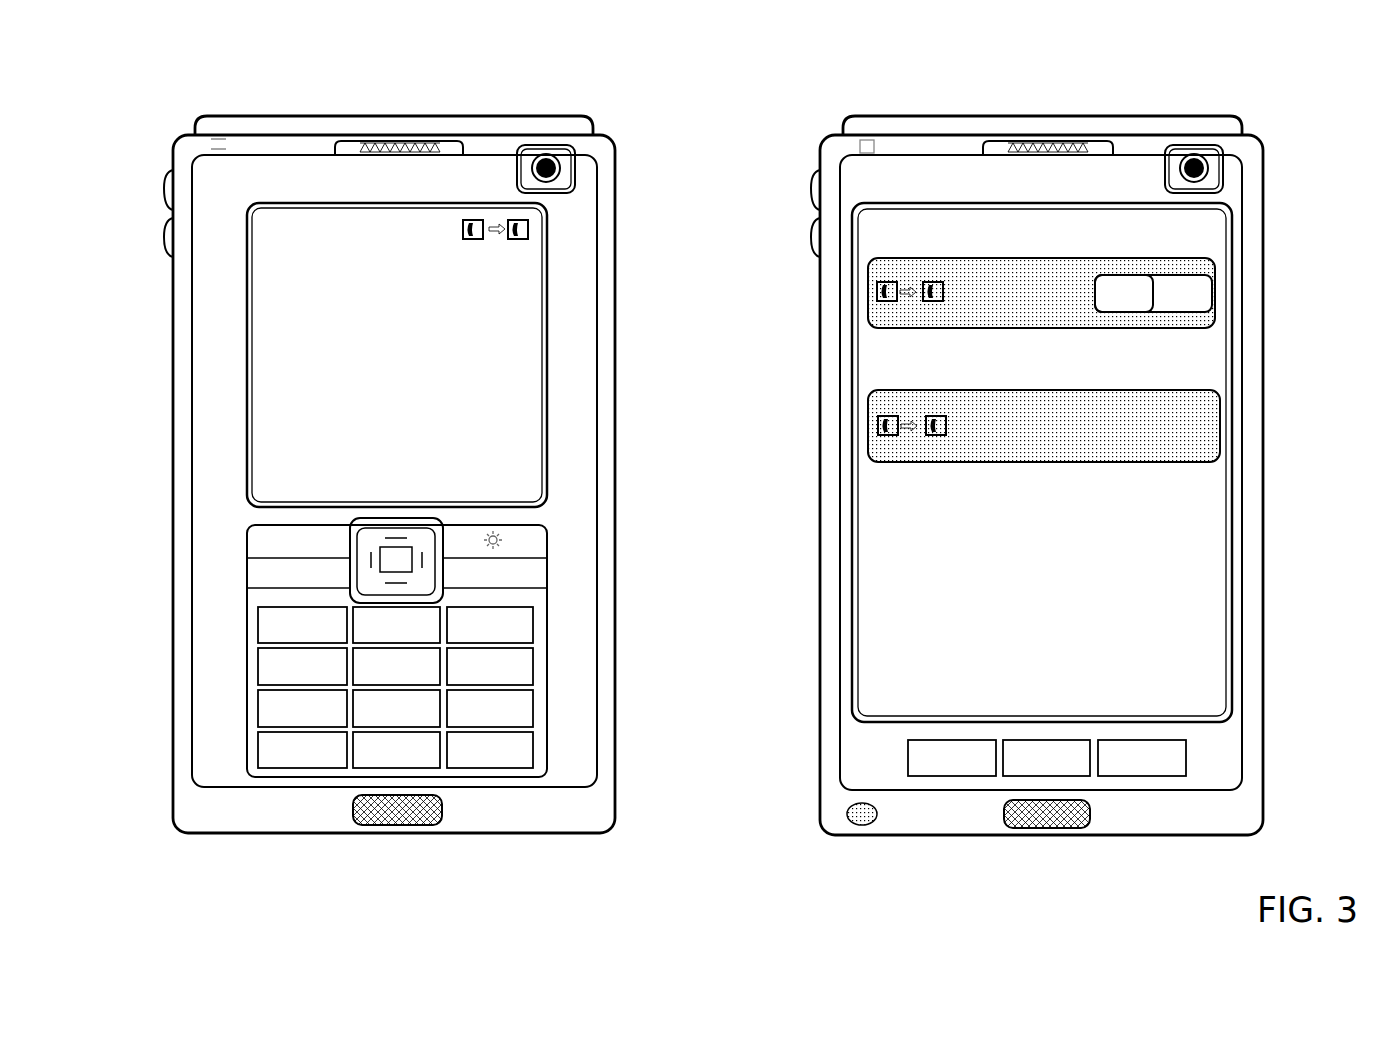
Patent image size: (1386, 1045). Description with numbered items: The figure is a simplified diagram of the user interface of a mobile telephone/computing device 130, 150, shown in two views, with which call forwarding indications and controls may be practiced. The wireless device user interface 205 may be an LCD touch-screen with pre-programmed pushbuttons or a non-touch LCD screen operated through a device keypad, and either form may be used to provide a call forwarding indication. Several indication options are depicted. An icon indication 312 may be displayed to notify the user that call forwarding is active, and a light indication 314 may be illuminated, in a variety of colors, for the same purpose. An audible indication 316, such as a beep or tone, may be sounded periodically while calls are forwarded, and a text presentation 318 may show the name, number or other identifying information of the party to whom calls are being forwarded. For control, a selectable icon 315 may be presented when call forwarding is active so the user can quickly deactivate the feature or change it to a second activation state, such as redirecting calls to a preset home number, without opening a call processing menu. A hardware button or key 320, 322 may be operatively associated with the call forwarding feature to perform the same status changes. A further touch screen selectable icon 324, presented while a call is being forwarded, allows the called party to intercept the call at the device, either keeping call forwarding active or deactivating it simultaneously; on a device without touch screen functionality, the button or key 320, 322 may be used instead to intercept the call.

The mobile telephone/computing device 130 is at (188, 121).
The mobile telephone/computing device 150 is at (713, 439).
The wireless device user interface 205 is at (932, 232).
The icon indication 312 is at (540, 226).
The light indication 314 is at (848, 808).
The selectable icon 315 is at (908, 315).
The audible indication 316 is at (407, 140).
The text presentation 318 is at (470, 410).
The hardware button 320 is at (815, 186).
The hardware key 322 is at (397, 560).
The touch screen selectable icon 324 is at (912, 448).